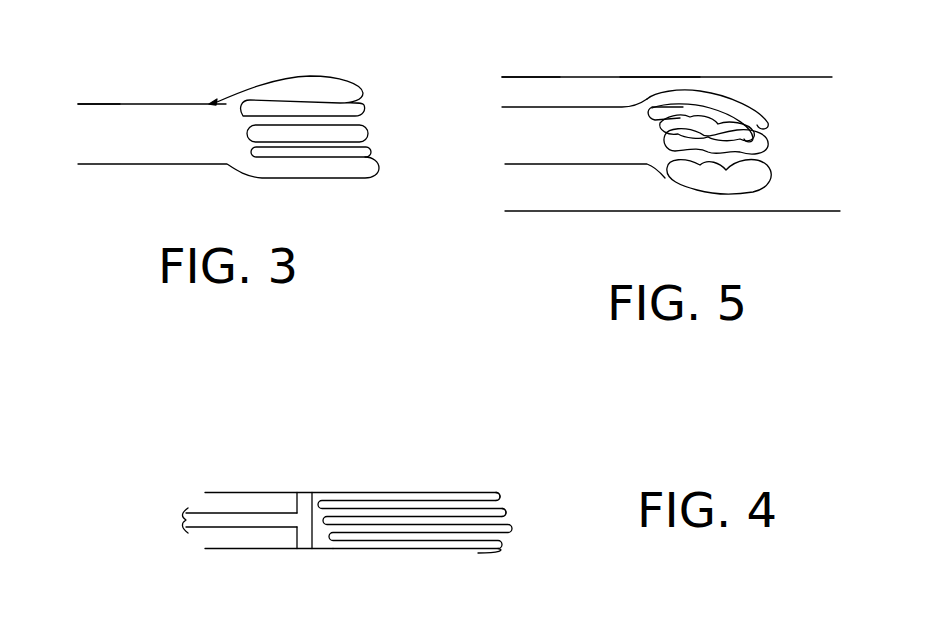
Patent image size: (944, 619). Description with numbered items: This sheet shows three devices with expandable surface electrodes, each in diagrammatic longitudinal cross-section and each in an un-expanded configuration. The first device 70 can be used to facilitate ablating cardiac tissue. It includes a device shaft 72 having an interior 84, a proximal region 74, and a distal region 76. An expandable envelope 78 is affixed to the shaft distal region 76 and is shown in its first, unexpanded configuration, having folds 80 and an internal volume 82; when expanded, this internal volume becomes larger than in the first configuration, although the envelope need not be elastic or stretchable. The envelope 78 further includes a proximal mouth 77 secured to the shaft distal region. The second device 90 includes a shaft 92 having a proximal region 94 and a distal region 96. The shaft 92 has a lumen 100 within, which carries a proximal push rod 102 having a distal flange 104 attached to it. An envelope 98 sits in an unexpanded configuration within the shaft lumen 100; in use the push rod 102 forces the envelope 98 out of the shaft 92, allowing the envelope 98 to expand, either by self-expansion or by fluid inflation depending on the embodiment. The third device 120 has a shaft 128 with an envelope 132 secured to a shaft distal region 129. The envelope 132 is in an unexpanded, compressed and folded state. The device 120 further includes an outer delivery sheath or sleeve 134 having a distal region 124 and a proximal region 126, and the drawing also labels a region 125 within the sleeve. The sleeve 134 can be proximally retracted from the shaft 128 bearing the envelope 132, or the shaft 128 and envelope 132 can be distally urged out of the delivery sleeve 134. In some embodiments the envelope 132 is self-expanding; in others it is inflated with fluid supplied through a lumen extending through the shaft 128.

In FIG. 3, the device 70 is at (104, 71).
In FIG. 3, the device shaft 72 is at (134, 103).
In FIG. 3, the proximal region 74 is at (86, 103).
In FIG. 3, the distal region 76 is at (229, 167).
In FIG. 3, the proximal mouth 77 is at (215, 100).
In FIG. 3, the expandable envelope 78 is at (322, 77).
In FIG. 3, the folds 80 is at (328, 102).
In FIG. 3, the internal volume 82 is at (347, 142).
In FIG. 3, the interior 84 is at (128, 142).
In FIG. 4, the device 90 is at (278, 424).
In FIG. 4, the shaft 92 is at (320, 493).
In FIG. 4, the proximal region 94 is at (212, 491).
In FIG. 4, the distal region 96 is at (482, 488).
In FIG. 4, the envelope 98 is at (508, 504).
In FIG. 4, the lumen 100 is at (246, 504).
In FIG. 4, the proximal push rod 102 is at (232, 520).
In FIG. 4, the distal flange 104 is at (307, 546).
In FIG. 5, the device 120 is at (742, 44).
In FIG. 5, the distal region 124 is at (818, 77).
In FIG. 5, the gap region 125 is at (835, 200).
In FIG. 5, the proximal region 126 is at (527, 77).
In FIG. 5, the shaft 128 is at (568, 166).
In FIG. 5, the shaft distal region 129 is at (657, 175).
In FIG. 5, the envelope 132 is at (728, 172).
In FIG. 5, the outer delivery sheath or sleeve 134 is at (655, 77).